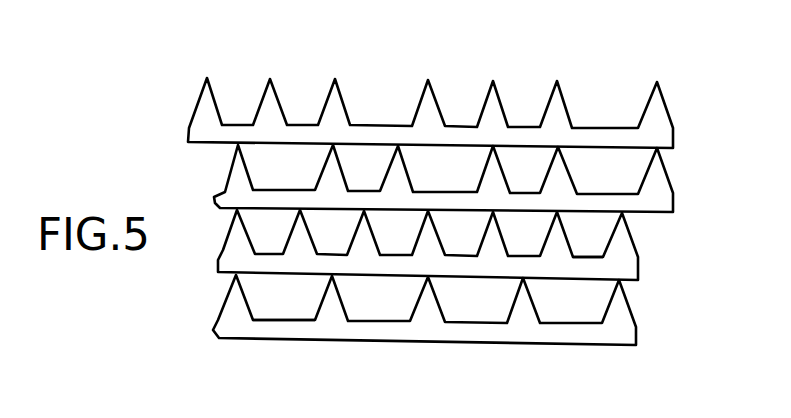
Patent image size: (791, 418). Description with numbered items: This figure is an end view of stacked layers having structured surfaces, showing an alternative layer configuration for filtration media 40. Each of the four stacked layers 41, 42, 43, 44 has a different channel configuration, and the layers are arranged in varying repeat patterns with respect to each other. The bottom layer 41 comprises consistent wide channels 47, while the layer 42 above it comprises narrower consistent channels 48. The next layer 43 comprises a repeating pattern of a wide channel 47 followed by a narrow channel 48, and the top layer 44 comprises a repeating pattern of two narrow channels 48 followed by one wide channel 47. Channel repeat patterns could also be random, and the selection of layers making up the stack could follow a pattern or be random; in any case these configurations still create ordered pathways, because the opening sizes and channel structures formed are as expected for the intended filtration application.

The filtration media 40 is at (693, 68).
The layer 41 is at (227, 305).
The layer 42 is at (228, 243).
The layer 43 is at (227, 183).
The layer 44 is at (200, 110).
The wide channel 47 is at (283, 300).
The narrow channel 48 is at (593, 237).